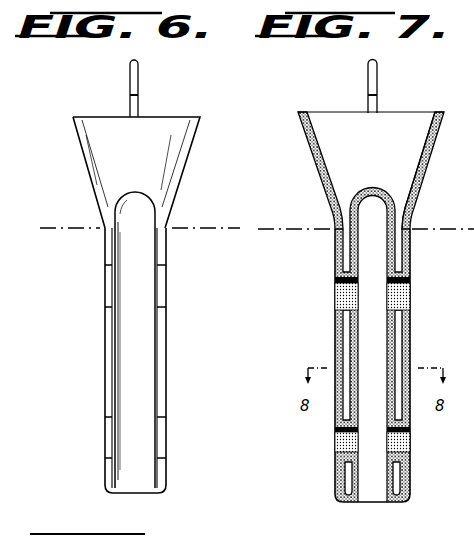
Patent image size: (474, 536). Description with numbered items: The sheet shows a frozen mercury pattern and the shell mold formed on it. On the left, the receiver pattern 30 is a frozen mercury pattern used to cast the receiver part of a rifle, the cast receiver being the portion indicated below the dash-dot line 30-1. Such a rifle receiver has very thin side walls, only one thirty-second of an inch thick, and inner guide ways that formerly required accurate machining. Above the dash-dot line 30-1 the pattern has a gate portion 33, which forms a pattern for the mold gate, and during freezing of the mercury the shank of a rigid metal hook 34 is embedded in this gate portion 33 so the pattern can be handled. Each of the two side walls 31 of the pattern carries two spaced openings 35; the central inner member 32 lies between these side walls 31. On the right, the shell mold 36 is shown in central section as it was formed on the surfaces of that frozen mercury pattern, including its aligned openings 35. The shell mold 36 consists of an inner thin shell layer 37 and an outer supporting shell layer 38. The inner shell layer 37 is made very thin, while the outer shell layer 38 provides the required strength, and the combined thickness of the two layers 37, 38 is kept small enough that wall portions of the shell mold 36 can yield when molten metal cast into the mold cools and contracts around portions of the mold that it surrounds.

In FIG. 6, the receiver pattern 30 is at (170, 248).
In FIG. 6, the dash-dot line 30-1 is at (80, 210).
In FIG. 6, the side walls 31 is at (188, 354).
In FIG. 6, the inner tube / bulb 32 is at (140, 387).
In FIG. 6, the gate portion 33 is at (183, 172).
In FIG. 6, the rigid metal hook 34 is at (140, 103).
In FIG. 6, the openings 35 is at (190, 437).
In FIG. 7, the openings 35 is at (430, 446).
In FIG. 7, the shell mold 36 is at (369, 153).
In FIG. 7, the inner shell layer 37 is at (426, 155).
In FIG. 7, the outer supporting shell layer 38 is at (435, 150).